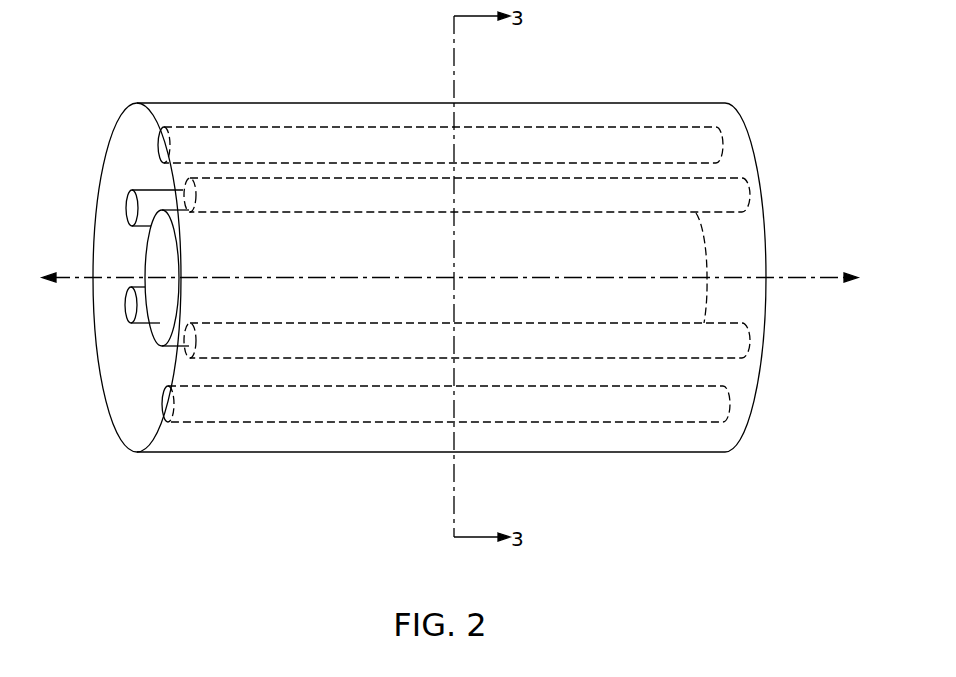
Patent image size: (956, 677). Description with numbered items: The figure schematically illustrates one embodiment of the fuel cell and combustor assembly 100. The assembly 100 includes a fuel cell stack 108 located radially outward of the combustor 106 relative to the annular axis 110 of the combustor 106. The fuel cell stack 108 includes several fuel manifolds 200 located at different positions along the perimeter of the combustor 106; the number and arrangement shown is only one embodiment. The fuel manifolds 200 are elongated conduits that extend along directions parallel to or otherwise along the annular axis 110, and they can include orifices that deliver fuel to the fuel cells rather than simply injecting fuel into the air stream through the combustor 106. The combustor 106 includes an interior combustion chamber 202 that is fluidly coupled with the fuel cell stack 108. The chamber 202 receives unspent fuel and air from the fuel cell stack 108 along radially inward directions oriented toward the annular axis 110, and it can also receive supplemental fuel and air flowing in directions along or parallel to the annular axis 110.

The fuel cell and combustor assembly 100 is at (427, 263).
The combustor 106 is at (117, 176).
The fuel cell stack 108 is at (263, 453).
The annular axis 110 is at (791, 290).
The fuel manifolds 200 is at (357, 138).
The interior combustion chamber 202 is at (165, 324).